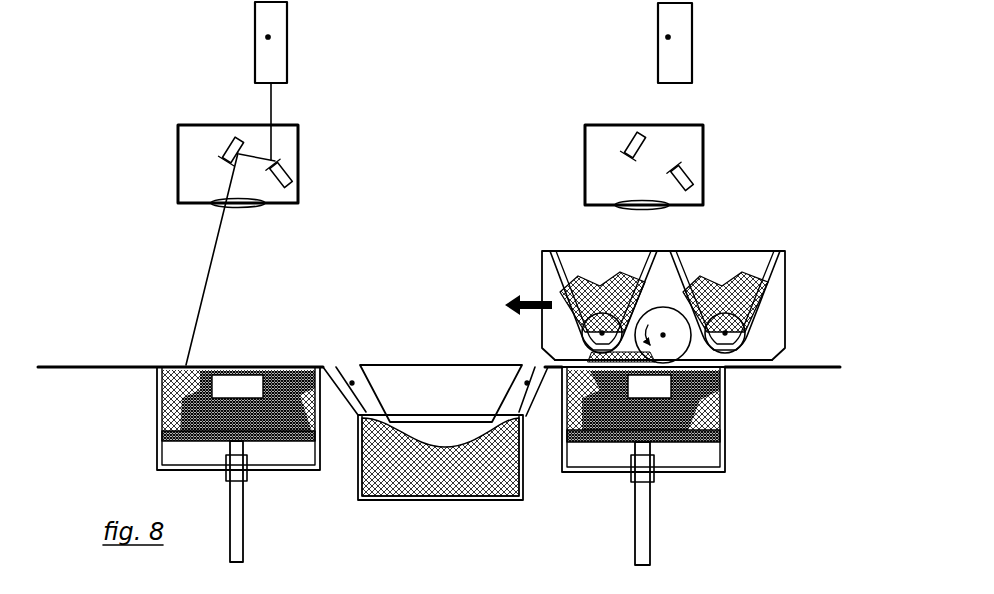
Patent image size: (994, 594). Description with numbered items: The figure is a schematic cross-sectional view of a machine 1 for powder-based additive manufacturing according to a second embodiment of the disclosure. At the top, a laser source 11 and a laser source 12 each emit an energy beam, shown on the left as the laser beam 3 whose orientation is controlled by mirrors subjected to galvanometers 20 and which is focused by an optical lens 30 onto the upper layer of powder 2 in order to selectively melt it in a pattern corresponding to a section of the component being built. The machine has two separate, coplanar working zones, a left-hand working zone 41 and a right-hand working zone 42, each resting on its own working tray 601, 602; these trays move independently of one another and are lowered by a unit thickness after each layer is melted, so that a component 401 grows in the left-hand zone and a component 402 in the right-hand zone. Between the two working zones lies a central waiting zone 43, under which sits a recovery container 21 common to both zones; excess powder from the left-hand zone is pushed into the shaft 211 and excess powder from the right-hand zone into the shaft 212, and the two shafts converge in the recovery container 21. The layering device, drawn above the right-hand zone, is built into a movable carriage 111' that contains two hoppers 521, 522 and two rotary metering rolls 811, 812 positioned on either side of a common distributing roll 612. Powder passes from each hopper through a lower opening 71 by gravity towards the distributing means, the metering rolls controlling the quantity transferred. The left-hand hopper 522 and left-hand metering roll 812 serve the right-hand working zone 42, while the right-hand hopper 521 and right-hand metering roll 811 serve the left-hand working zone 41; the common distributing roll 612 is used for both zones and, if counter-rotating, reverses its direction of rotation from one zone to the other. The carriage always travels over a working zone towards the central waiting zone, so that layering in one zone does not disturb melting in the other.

The machine 1 is at (127, 207).
The laser beam 3 is at (203, 276).
The laser source 11 is at (268, 37).
The laser source 12 is at (668, 37).
The mirrors subjected to galvanometers 20 is at (225, 145).
The optical lens 30 is at (245, 209).
The powder 2 is at (465, 384).
The left-hand working zone 41 is at (263, 343).
The right-hand working zone 42 is at (736, 384).
The central waiting zone 43 is at (410, 350).
The component 401 is at (256, 396).
The component 402 is at (667, 396).
The working tray 601 is at (268, 436).
The working tray 602 is at (659, 436).
The recovery container 21 is at (424, 500).
The shaft 211 is at (352, 386).
The shaft 212 is at (528, 386).
The lower opening 71 is at (548, 355).
The movable carriage 111' is at (634, 296).
The left-hand hopper 522 is at (554, 260).
The right-hand hopper 521 is at (777, 259).
The left-hand metering roll 812 is at (595, 317).
The right-hand metering roll 811 is at (721, 317).
The common distributing roll 612 is at (676, 322).